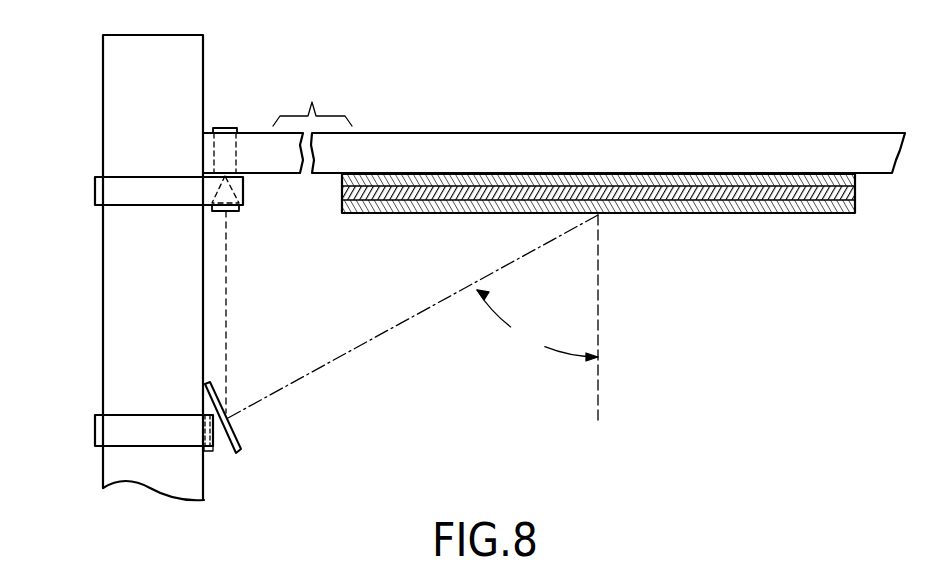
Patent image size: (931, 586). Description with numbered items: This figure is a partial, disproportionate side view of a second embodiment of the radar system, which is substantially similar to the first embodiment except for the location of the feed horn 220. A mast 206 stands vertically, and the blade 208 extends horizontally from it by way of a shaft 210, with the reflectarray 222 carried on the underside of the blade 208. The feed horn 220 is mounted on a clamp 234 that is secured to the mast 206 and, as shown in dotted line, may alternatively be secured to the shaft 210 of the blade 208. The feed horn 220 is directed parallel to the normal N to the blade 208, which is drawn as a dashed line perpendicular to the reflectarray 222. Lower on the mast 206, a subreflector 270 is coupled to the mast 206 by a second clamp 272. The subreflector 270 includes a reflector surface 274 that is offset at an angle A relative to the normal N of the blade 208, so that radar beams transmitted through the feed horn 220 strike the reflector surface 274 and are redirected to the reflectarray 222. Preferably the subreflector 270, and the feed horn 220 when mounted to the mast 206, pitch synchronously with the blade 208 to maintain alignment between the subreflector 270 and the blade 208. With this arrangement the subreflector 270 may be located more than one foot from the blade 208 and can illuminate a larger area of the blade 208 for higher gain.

The mast 206 is at (127, 141).
The blade 208 is at (650, 150).
The shaft 210 is at (263, 148).
The feed horn 220 is at (237, 210).
The reflectarray 222 is at (724, 215).
The clamp 234 is at (110, 188).
The subreflector 270 is at (222, 440).
The clamp 272 is at (117, 433).
The reflector surface 274 is at (234, 432).
The normal N is at (600, 307).
The angle A is at (537, 325).